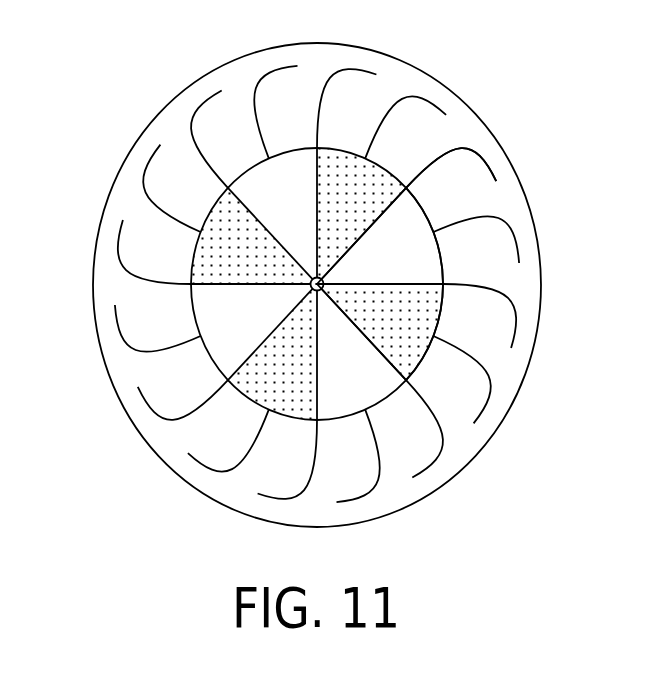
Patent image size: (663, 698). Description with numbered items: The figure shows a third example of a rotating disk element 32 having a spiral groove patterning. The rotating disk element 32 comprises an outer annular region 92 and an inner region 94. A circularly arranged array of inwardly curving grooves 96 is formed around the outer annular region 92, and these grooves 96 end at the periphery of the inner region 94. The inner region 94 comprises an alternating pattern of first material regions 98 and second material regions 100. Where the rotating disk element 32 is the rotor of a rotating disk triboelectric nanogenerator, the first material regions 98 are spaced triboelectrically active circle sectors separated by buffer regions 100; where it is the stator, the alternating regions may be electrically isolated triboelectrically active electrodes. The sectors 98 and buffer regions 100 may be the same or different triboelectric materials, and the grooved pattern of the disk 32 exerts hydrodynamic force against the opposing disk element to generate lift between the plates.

The rotating disk element 32 is at (78, 68).
The outer annular region 92 is at (414, 84).
The inner region 94 is at (222, 345).
The inwardly curving grooves 96 is at (497, 168).
The first material regions 98 is at (417, 317).
The second material regions 100 is at (417, 253).